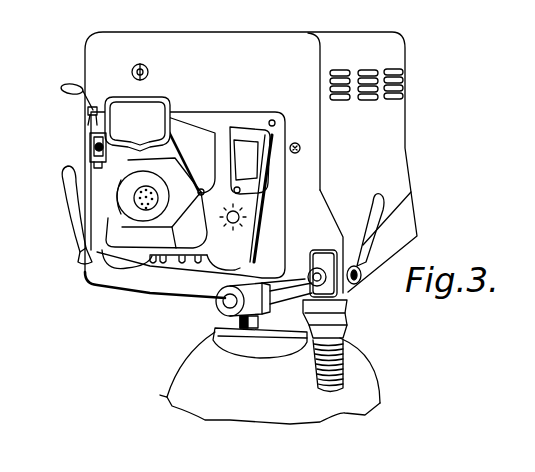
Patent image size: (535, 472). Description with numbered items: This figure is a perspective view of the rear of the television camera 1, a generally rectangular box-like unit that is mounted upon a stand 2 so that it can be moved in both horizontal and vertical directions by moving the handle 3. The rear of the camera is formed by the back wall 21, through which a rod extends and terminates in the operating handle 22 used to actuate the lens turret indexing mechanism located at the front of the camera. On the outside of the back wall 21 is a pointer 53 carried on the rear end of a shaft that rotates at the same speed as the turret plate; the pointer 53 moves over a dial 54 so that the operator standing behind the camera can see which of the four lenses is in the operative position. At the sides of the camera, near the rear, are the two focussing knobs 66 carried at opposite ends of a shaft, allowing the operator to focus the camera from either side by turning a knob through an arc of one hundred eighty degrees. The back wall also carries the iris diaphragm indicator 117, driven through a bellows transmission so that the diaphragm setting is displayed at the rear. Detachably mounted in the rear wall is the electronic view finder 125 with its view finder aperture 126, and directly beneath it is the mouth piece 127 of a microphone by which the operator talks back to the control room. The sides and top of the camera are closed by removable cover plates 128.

The television camera 1 is at (402, 54).
The stand 2 is at (350, 363).
The handle 3 is at (295, 282).
The back wall 21 is at (135, 33).
The operating handle 22 is at (63, 87).
The pointer 53 is at (91, 150).
The dial 54 is at (98, 163).
The focussing knobs 66 is at (63, 184).
The iris diaphragm indicator 117 is at (149, 70).
The electronic view finder 125 is at (201, 195).
The view finder aperture 126 is at (150, 118).
The mouth piece 127 is at (130, 188).
The cover plates 128 is at (385, 140).